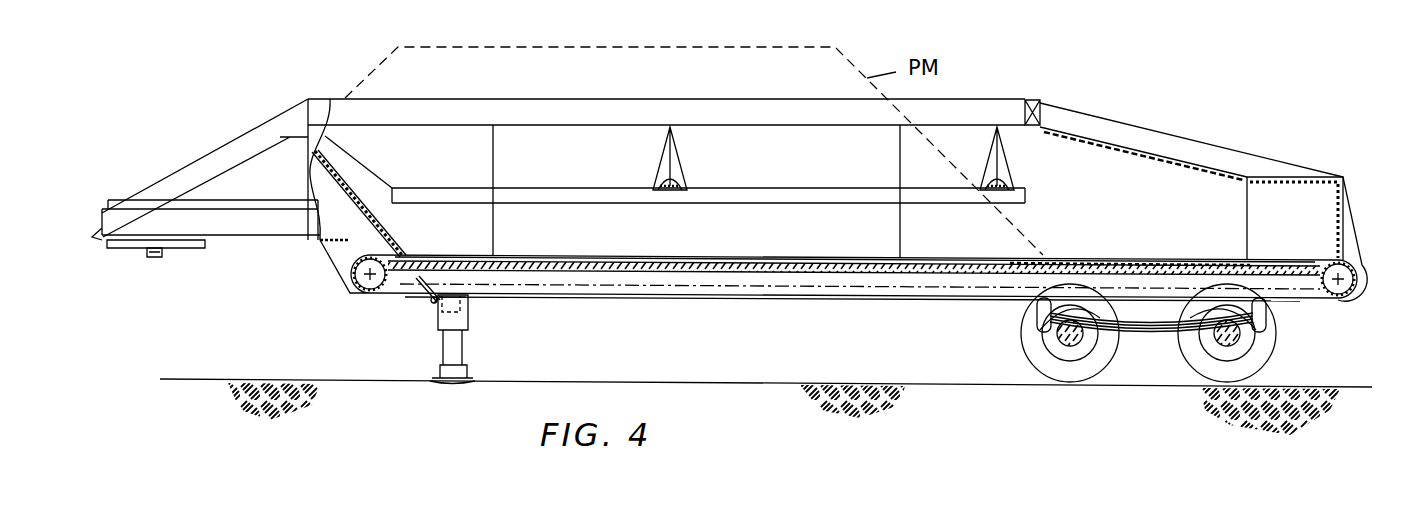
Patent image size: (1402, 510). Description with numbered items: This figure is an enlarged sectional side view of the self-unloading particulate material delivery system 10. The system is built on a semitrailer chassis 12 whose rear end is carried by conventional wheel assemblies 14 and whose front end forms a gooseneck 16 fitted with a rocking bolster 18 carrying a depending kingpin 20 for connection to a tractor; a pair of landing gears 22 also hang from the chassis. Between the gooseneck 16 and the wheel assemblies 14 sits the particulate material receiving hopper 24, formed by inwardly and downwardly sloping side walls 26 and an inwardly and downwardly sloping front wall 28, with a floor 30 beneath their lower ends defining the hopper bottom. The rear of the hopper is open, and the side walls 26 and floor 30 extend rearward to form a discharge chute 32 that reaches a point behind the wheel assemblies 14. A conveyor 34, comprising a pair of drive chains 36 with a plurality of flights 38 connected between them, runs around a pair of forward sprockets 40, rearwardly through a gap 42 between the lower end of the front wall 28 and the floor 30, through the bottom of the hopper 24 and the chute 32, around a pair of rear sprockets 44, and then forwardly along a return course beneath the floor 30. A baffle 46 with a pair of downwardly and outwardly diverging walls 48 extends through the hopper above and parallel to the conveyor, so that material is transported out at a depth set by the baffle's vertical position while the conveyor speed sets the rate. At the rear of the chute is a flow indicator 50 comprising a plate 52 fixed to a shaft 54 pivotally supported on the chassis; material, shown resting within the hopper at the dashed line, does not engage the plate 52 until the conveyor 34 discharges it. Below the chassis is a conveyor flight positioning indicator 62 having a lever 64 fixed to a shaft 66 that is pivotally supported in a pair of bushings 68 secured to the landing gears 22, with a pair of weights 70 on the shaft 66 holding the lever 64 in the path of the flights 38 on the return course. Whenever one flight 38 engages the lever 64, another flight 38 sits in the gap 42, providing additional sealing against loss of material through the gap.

The self-unloading particulate material delivery system 10 is at (243, 110).
The semitrailer chassis 12 is at (258, 240).
The wheel assemblies 14 is at (1184, 353).
The gooseneck 16 is at (167, 180).
The rocking bolster 18 is at (186, 247).
The kingpin 20 is at (155, 257).
The landing gears 22 is at (468, 326).
The particulate material receiving hopper 24 is at (560, 142).
The side walls 26 is at (665, 229).
The front wall 28 is at (383, 221).
The floor 30 is at (561, 257).
The discharge chute 32 is at (1125, 186).
The conveyor 34 is at (716, 259).
The drive chains 36 is at (1079, 262).
The flights 38 is at (1245, 258).
The forward sprockets 40 is at (355, 268).
The gap 42 is at (384, 249).
The rear sprockets 44 is at (1348, 290).
The baffle 46 is at (621, 188).
The diverging walls 48 is at (780, 200).
The flow indicator 50 is at (1353, 210).
The plate 52 is at (1334, 217).
The shaft 54 is at (1332, 180).
The conveyor flight positioning indicator 62 is at (421, 319).
The lever 64 is at (425, 283).
The shaft 66 is at (430, 300).
The bushings 68 is at (436, 306).
The weights 70 is at (470, 303).